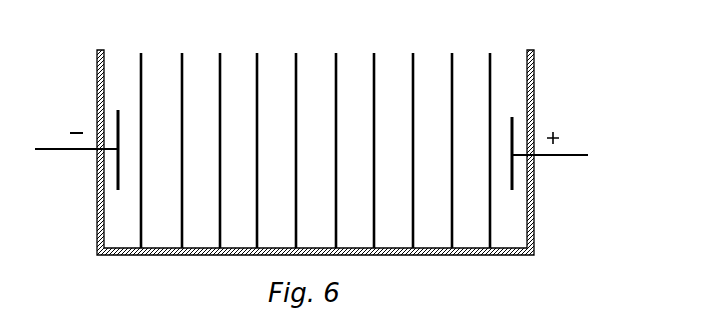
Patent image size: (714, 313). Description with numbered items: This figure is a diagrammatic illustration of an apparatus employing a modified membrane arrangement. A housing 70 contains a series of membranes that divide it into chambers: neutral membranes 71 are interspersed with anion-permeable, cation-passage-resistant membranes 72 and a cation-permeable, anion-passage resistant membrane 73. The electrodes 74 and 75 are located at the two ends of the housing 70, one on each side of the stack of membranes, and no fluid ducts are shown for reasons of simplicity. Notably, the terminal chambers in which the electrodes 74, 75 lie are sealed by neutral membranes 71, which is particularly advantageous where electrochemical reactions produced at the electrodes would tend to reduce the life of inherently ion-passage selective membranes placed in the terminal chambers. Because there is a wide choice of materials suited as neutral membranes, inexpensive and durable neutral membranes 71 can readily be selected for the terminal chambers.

The housing 70 is at (96, 236).
The neutral membranes 71 is at (315, 138).
The anion-permeable, cation-passage-resistant membranes 72 is at (381, 134).
The cation-permeable, anion-passage resistant membrane 73 is at (183, 96).
The electrode 74 is at (131, 104).
The electrode 75 is at (511, 117).